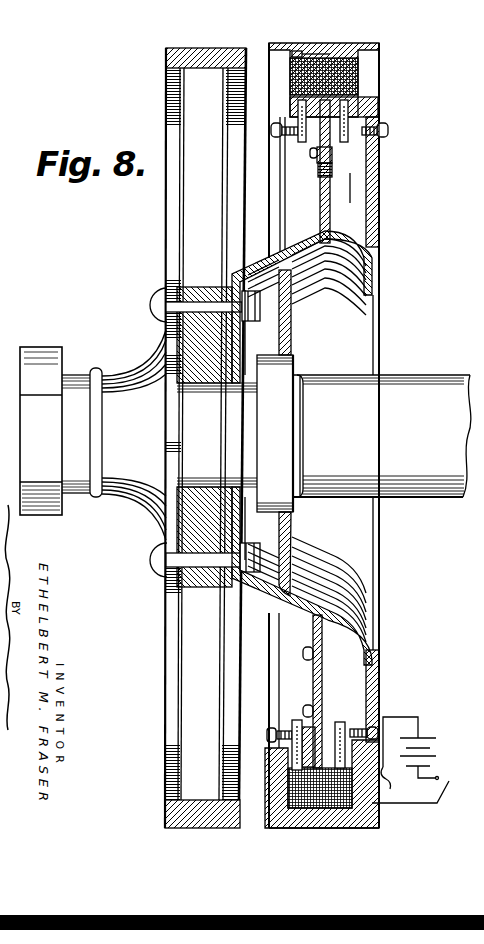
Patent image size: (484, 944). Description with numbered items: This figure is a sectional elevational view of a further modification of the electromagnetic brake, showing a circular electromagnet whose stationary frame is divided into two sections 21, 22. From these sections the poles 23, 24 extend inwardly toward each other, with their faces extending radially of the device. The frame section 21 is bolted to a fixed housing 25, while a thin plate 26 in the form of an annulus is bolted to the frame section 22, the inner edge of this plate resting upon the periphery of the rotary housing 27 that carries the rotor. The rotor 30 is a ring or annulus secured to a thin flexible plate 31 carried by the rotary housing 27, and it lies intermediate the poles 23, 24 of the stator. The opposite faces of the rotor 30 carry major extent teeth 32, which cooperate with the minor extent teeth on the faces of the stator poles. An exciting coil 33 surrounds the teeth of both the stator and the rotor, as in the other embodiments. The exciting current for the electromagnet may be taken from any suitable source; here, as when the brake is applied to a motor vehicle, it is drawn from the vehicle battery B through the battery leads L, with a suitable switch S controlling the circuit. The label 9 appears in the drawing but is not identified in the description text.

The terminal 9 is at (380, 53).
The frame section 21 is at (380, 78).
The frame section 22 is at (268, 82).
The pole 23 is at (380, 109).
The pole 24 is at (268, 112).
The fixed housing 25 is at (380, 222).
The thin plate 26 is at (296, 187).
The housing 27 is at (250, 273).
The rotor 30 is at (331, 148).
The thin flexible plate 31 is at (332, 175).
The major extent teeth 32 is at (315, 142).
The exciting coil 33 is at (360, 70).
The battery B is at (438, 740).
The battery leads L is at (386, 783).
The switch S is at (448, 793).